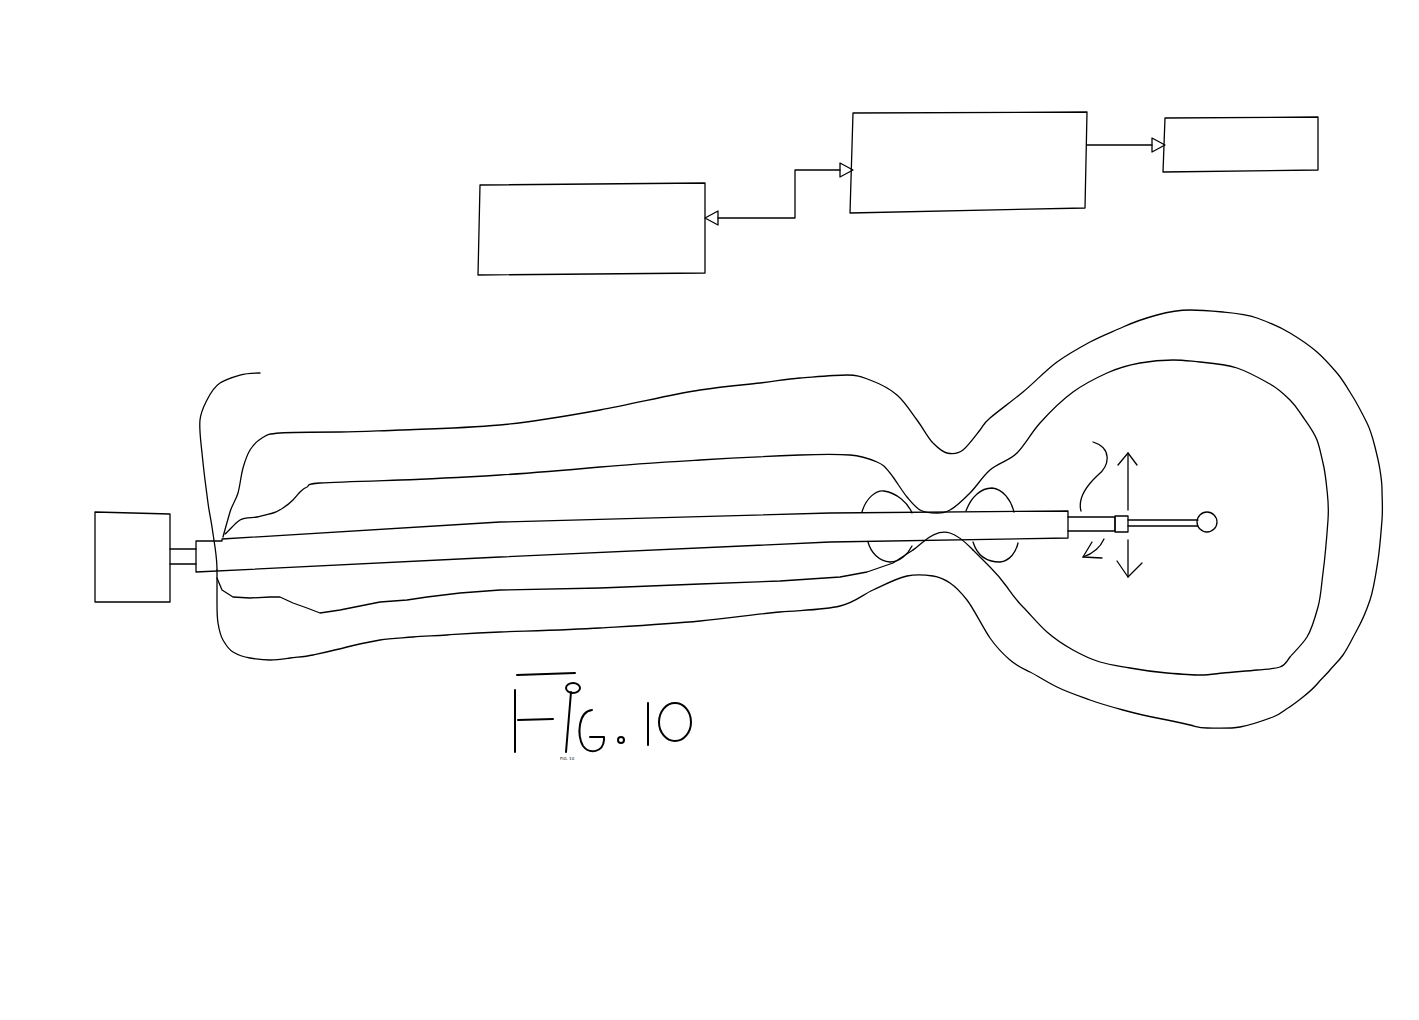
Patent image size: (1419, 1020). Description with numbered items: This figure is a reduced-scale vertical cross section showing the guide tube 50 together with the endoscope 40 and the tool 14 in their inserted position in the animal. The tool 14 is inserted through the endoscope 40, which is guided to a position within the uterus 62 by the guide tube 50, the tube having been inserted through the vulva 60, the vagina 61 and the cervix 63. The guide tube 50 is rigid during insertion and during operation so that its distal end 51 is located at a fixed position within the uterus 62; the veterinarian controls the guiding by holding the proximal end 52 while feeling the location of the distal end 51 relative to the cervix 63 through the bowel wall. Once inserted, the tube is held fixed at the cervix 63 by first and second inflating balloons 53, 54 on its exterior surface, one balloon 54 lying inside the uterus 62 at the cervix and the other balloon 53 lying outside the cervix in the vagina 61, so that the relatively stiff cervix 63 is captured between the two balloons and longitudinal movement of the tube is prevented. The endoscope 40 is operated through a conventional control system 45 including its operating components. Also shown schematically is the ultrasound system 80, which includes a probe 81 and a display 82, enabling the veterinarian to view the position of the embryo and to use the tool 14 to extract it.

The tool 14 is at (1175, 512).
The endoscope 40 is at (1107, 492).
The control system 45 is at (148, 528).
The guide tube 50 is at (422, 522).
The distal end 51 is at (1050, 515).
The proximal end 52 is at (253, 460).
The first inflating balloon 53 is at (890, 498).
The second inflating balloon 54 is at (987, 497).
The vulva 60 is at (283, 418).
The vagina 61 is at (648, 408).
The uterus 62 is at (1172, 335).
The cervix 63 is at (935, 558).
The ultrasound system 80 is at (855, 122).
The probe 81 is at (615, 185).
The display 82 is at (1230, 158).